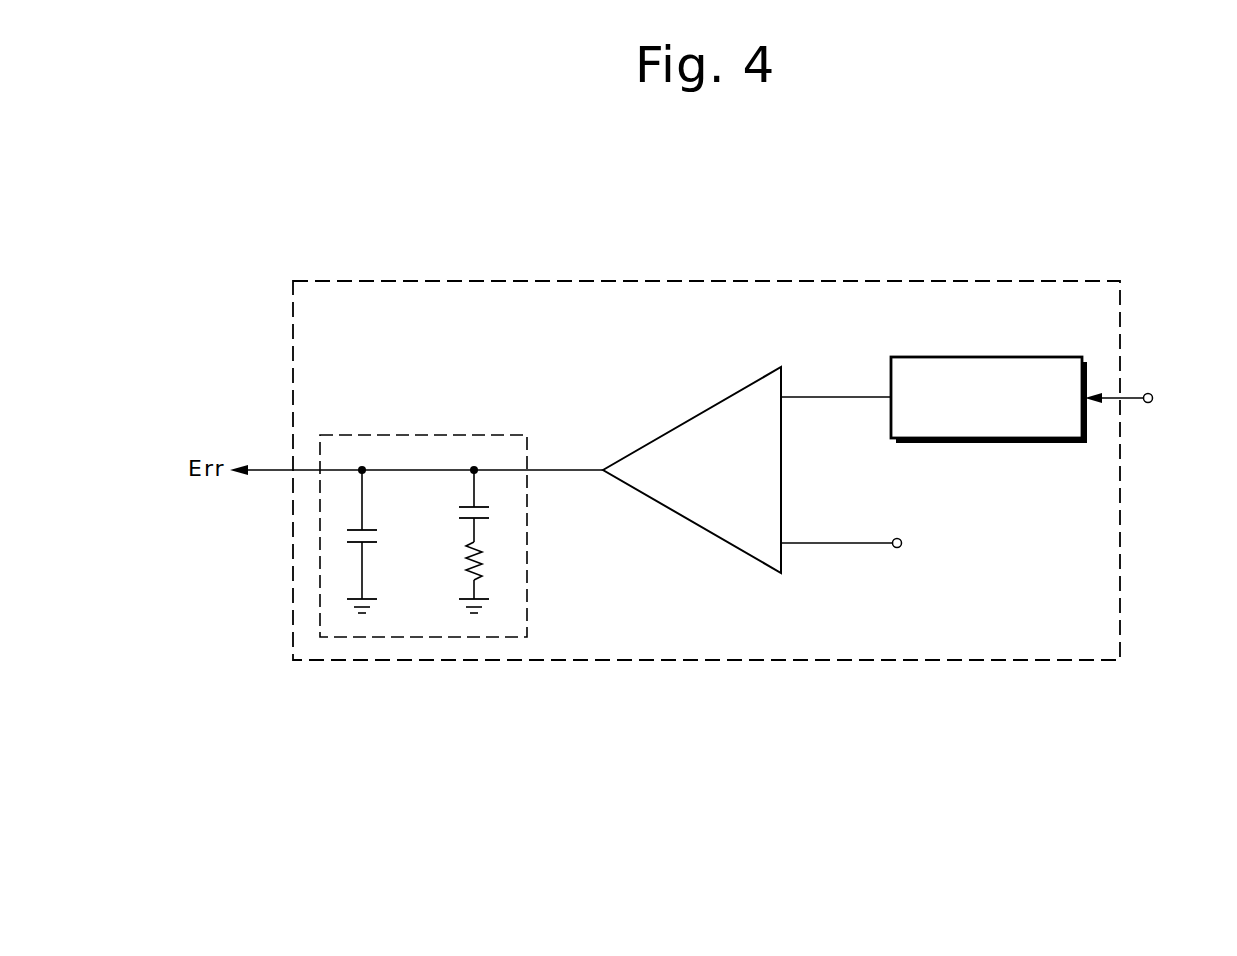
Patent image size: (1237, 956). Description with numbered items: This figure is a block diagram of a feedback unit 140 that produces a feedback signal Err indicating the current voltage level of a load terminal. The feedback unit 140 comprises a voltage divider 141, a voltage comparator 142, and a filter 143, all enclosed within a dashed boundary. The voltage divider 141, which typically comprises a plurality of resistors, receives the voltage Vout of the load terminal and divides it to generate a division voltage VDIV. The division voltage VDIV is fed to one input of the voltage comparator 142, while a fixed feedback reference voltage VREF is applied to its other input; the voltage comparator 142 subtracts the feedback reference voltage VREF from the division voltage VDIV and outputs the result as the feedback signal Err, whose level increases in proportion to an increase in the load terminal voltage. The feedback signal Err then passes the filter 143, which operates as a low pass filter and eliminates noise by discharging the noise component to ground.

The feedback unit 140 is at (1007, 281).
The voltage divider 141 is at (1033, 357).
The voltage comparator 142 is at (730, 393).
The filter 143 is at (478, 435).